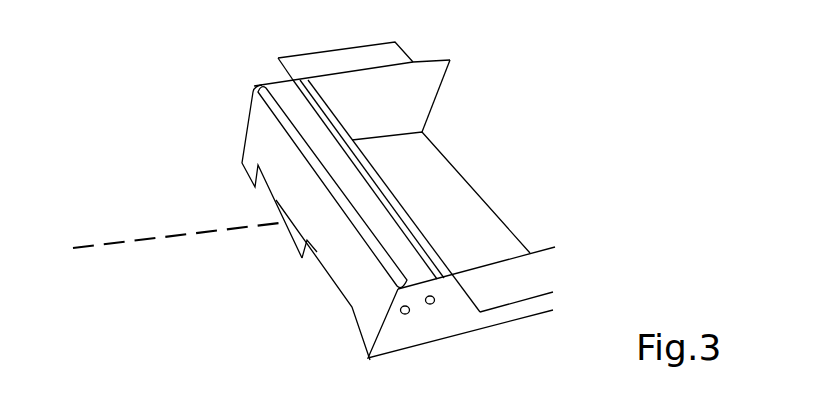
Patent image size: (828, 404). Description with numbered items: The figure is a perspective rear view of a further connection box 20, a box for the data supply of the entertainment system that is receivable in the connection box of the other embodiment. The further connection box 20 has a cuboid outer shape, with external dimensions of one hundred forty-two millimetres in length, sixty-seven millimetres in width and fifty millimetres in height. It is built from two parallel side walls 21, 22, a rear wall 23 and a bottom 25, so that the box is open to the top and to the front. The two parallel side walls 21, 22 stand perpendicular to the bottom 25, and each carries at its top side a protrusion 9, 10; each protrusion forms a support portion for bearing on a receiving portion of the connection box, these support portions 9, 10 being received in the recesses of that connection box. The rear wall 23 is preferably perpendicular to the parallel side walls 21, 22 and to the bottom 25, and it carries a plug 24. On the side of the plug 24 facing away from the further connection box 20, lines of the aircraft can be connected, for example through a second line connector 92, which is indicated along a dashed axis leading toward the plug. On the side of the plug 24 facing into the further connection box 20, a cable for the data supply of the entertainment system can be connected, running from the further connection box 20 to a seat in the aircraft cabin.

The protrusion 10 is at (304, 60).
The further connection box 20 is at (186, 132).
The side wall 21 is at (427, 325).
The side wall 22 is at (403, 82).
The rear wall 23 is at (372, 307).
The plug 24 is at (289, 226).
The bottom 25 is at (463, 228).
The protrusion 9 is at (512, 285).
The second line connector 92 is at (142, 242).